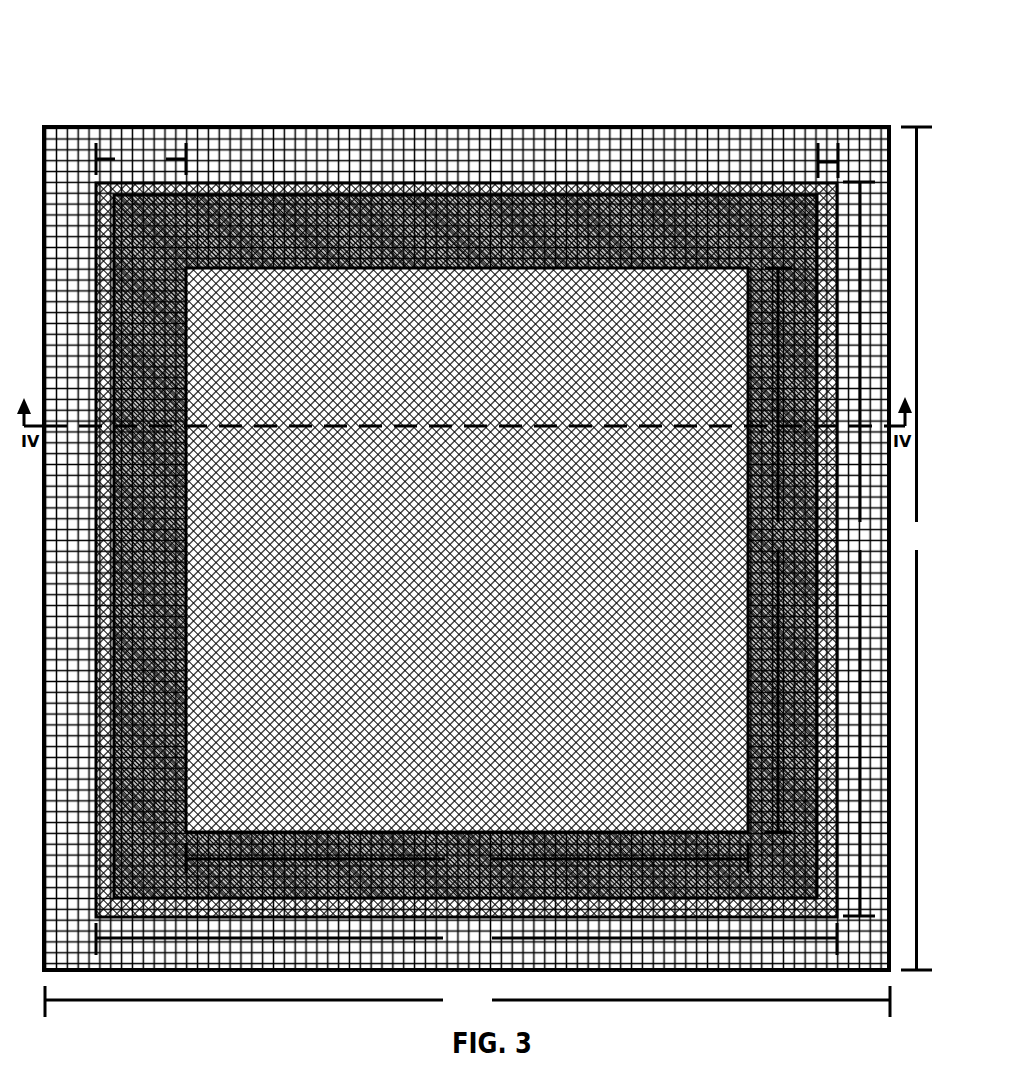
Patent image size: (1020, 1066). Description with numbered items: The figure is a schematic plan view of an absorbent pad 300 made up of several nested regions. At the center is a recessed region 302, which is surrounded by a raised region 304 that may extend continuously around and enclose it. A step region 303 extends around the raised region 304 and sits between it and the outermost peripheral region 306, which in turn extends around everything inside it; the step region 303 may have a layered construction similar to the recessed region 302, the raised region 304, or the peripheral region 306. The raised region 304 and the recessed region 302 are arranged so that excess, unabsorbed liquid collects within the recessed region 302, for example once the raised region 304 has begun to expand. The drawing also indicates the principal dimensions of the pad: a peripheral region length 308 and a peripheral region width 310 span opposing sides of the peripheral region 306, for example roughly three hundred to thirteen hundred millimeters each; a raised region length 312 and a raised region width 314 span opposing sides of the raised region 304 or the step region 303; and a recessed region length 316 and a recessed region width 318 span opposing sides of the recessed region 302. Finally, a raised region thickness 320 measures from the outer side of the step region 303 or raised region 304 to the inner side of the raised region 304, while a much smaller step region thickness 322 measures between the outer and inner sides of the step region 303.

The absorbent pad 300 is at (77, 48).
The recessed region 302 is at (380, 283).
The step region 303 is at (775, 190).
The raised region 304 is at (541, 215).
The peripheral region 306 is at (658, 140).
The peripheral region length 308 is at (934, 548).
The peripheral region width 310 is at (485, 1012).
The raised region length 312 is at (880, 548).
The raised region width 314 is at (485, 950).
The recessed region length 316 is at (797, 548).
The recessed region width 318 is at (485, 869).
The raised region thickness 320 is at (157, 169).
The step region thickness 322 is at (836, 153).